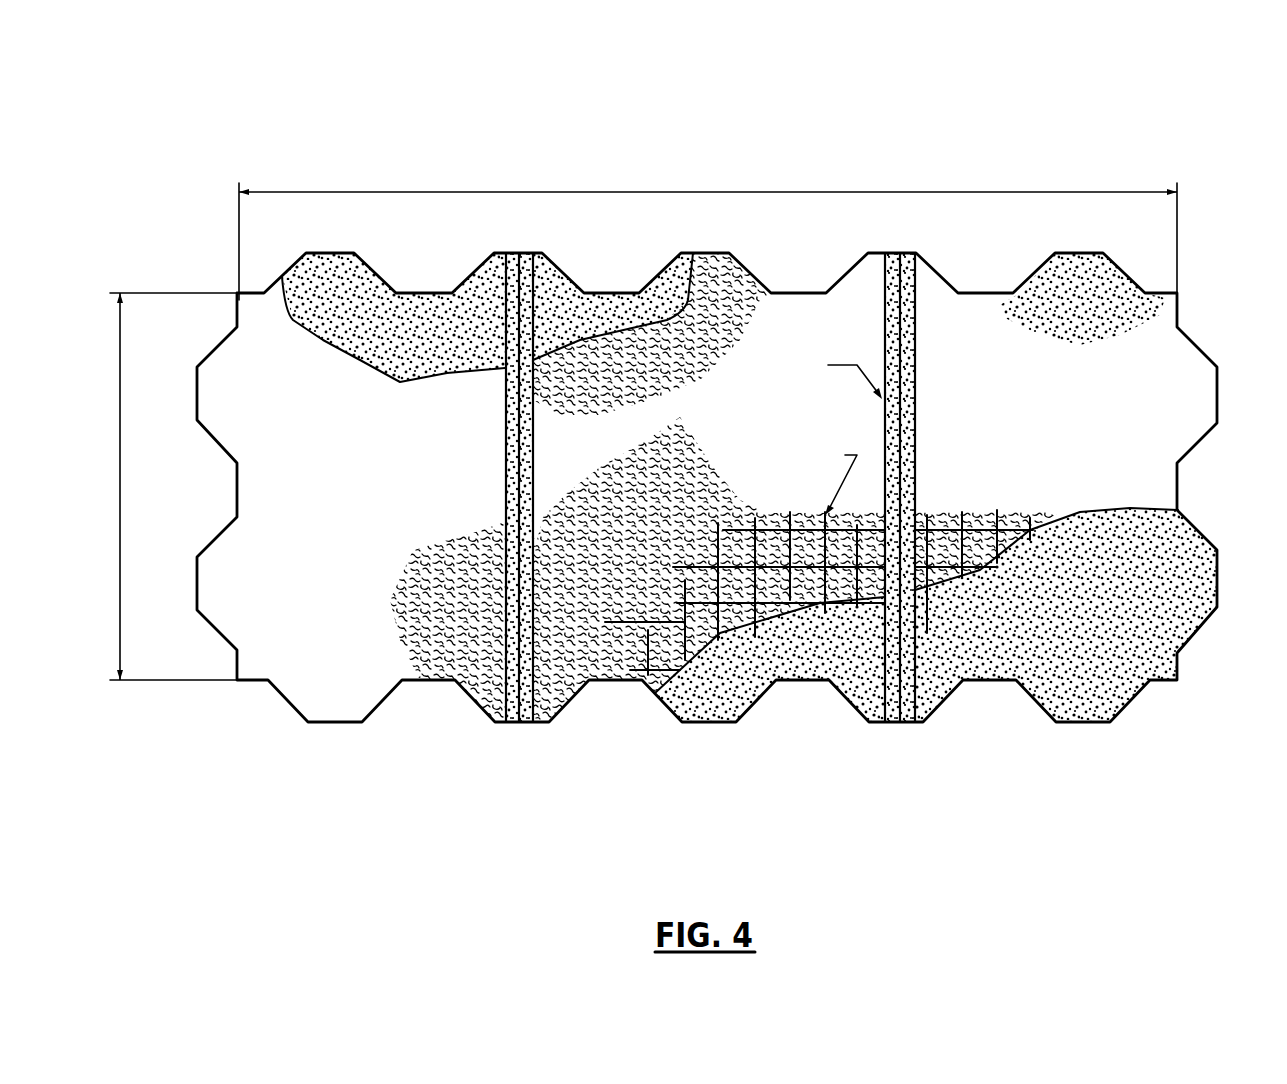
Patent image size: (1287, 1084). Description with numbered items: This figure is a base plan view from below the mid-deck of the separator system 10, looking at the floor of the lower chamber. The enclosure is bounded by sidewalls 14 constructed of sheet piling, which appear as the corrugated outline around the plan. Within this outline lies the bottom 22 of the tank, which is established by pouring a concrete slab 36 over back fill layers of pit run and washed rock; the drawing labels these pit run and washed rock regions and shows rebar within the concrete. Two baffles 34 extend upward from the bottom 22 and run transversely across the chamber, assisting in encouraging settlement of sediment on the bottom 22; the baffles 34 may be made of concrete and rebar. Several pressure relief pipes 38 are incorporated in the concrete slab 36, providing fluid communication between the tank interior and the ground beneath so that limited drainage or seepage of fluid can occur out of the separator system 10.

The separator system 10 is at (121, 103).
The sidewalls 14 is at (1203, 343).
The bottom 22 is at (1163, 550).
The baffles 34 is at (505, 448).
The concrete slab 36 is at (1003, 640).
The pressure relief pipe 38 is at (380, 396).